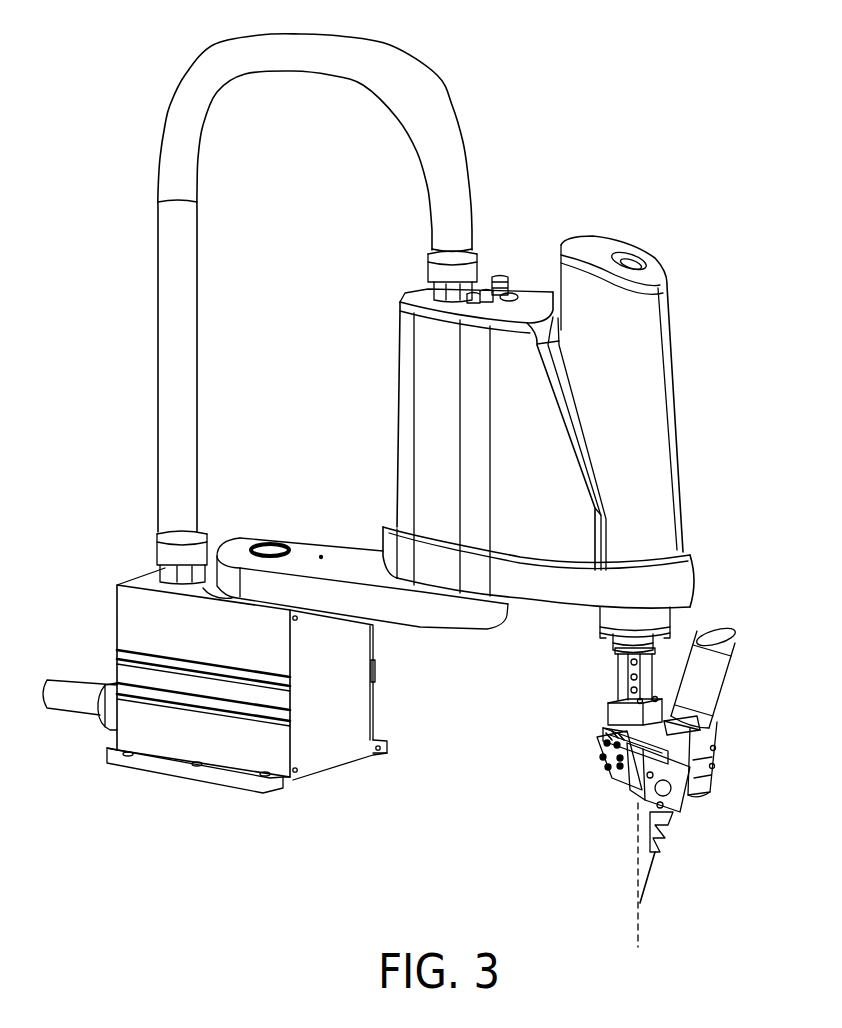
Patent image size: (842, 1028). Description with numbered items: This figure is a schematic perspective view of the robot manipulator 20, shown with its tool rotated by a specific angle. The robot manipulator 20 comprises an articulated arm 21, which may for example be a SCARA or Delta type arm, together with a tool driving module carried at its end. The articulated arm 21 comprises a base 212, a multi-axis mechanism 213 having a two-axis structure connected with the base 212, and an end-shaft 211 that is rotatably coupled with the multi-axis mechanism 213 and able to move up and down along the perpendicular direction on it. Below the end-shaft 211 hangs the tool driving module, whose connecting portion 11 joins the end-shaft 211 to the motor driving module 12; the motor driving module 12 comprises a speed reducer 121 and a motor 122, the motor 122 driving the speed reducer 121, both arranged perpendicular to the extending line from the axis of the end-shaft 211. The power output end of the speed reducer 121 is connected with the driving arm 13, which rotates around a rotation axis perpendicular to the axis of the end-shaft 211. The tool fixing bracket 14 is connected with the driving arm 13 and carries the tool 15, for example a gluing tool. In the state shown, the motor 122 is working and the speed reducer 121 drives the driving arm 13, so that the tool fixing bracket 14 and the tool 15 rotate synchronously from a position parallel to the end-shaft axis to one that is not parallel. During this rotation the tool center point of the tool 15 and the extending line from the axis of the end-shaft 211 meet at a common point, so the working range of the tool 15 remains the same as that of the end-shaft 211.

The robot manipulator 20 is at (733, 39).
The articulated arm 21 is at (534, 308).
The end-shaft 211 is at (610, 638).
The base 212 is at (257, 747).
The multi-axis mechanism 213 is at (643, 392).
The mounting rod 11 is at (620, 697).
The motor driving module 12 is at (712, 729).
The speed reducer 121 is at (652, 743).
The motor 122 is at (705, 712).
The driving arm 13 is at (605, 765).
The tool fixing bracket 14 is at (693, 787).
The tool 15 is at (713, 682).